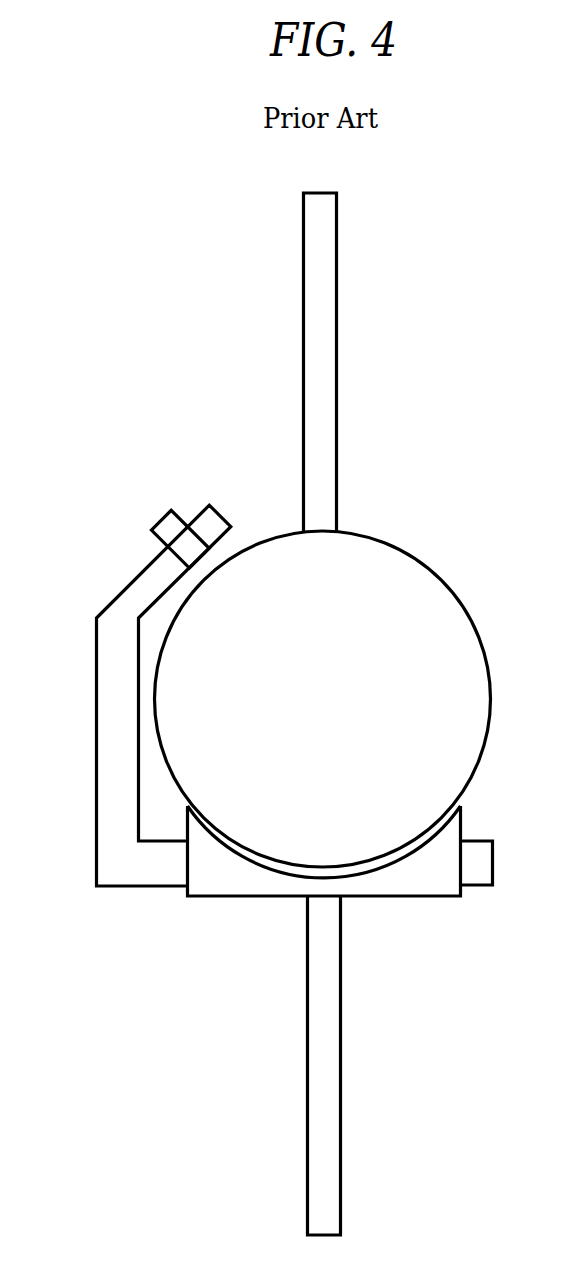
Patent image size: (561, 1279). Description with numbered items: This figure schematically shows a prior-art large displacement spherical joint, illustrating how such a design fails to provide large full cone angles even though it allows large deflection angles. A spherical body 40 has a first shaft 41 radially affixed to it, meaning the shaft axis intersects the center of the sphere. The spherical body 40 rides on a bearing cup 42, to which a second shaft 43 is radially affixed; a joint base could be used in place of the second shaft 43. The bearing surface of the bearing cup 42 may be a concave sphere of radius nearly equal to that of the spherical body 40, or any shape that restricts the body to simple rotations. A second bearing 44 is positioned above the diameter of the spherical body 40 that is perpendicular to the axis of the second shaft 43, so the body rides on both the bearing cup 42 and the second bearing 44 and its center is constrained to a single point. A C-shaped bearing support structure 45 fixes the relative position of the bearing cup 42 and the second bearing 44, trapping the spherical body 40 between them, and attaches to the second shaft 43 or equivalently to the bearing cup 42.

The spherical body 40 is at (318, 700).
The first shaft 41 is at (326, 278).
The bearing cup 42 is at (446, 875).
The second shaft 43 is at (332, 1172).
The second bearing 44 is at (150, 514).
The C-shaped bearing support structure 45 is at (88, 729).